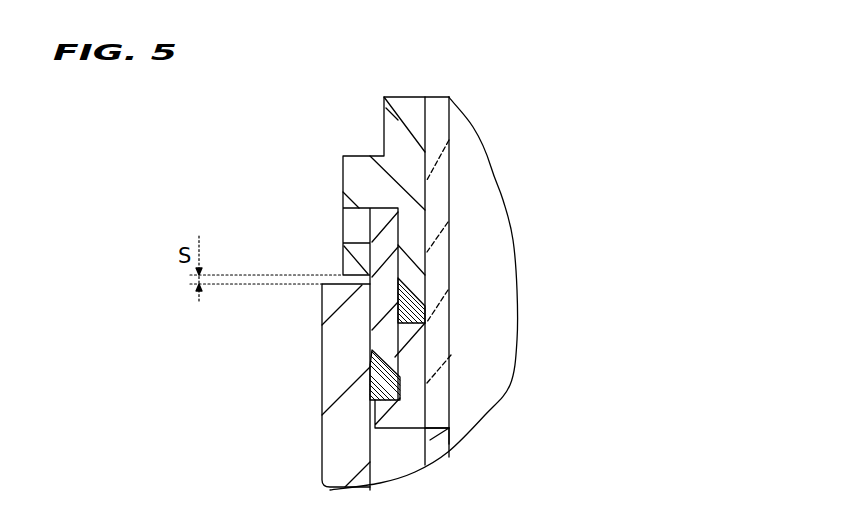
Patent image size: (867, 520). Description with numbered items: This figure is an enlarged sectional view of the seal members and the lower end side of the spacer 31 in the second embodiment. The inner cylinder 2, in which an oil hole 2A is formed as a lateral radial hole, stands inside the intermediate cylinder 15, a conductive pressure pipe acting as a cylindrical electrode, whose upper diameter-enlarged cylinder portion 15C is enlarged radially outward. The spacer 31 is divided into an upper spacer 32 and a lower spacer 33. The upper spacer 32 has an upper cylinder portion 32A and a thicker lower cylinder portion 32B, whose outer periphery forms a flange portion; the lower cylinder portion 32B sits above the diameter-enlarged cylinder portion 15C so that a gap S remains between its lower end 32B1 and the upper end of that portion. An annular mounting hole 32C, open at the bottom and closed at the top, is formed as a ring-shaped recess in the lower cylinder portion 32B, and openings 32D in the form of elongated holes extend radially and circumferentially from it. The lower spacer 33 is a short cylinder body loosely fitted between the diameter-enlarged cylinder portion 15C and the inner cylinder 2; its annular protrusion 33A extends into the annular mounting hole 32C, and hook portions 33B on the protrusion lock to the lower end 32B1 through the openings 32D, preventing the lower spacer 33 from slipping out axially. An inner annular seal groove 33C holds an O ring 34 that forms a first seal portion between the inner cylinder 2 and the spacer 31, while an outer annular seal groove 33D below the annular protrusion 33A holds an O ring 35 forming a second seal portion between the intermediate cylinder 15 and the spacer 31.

The inner cylinder 2 is at (453, 136).
The oil hole 2A is at (449, 448).
The intermediate cylinder 15 is at (322, 446).
The upper diameter-enlarged cylinder portion 15C is at (345, 345).
The spacer 31 is at (380, 143).
The upper spacer 32 is at (423, 186).
The upper cylinder portion 32A is at (383, 97).
The lower cylinder portion 32B is at (372, 166).
The lower end 32B1 is at (343, 268).
The annular mounting hole 32C is at (427, 272).
The openings 32D is at (357, 214).
The lower spacer 33 is at (401, 397).
The annular protrusion 33A is at (427, 222).
The hook portions 33B is at (369, 240).
The annular seal groove 33C is at (405, 346).
The annular seal groove 33D is at (450, 428).
The O ring 34 is at (421, 298).
The O ring 35 is at (379, 381).